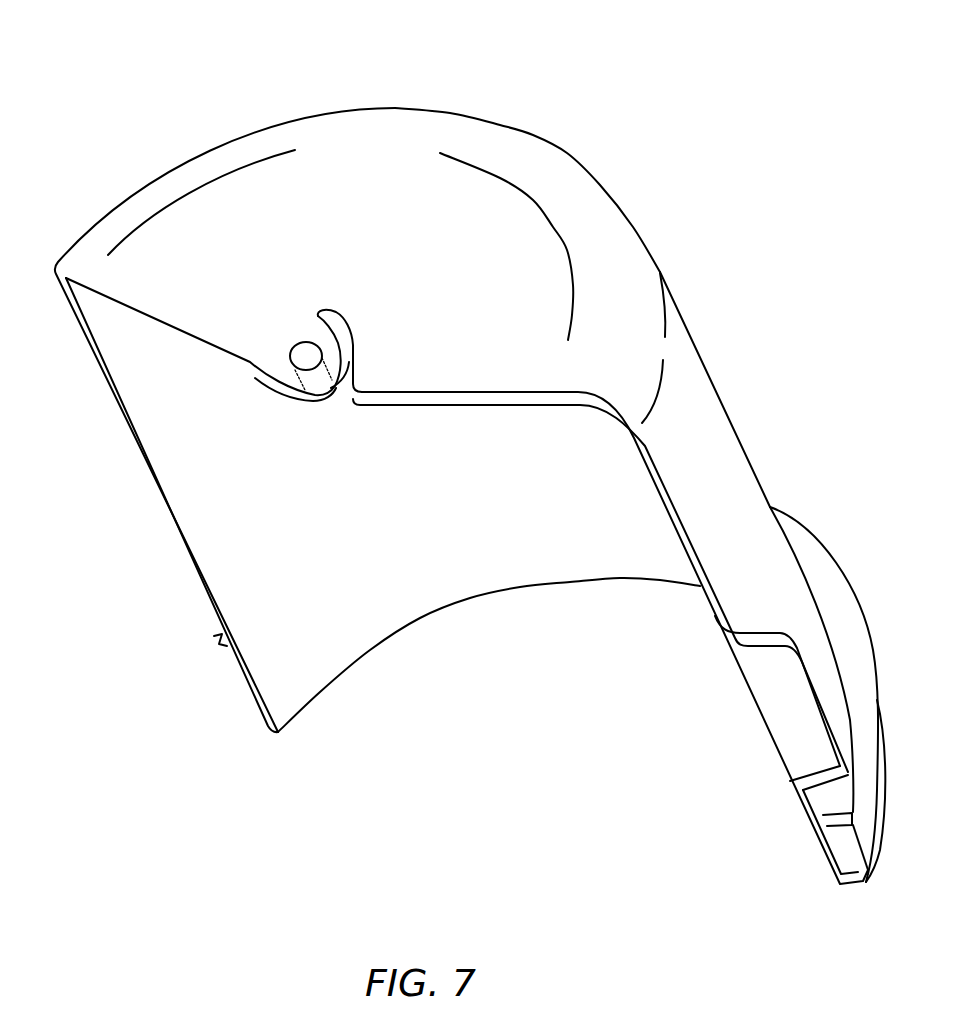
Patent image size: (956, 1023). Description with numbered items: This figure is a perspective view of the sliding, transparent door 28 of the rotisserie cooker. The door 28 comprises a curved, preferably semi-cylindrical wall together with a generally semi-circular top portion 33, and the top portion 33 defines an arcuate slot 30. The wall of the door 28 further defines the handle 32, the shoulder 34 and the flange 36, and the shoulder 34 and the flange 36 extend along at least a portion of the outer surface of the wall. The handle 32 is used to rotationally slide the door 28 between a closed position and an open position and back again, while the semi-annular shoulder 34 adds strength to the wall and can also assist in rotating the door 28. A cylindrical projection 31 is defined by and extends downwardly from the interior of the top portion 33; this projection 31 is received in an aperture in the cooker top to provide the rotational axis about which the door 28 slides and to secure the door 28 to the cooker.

The door 28 is at (629, 168).
The arcuate slot 30 is at (353, 352).
The cylindrical projection 31 is at (322, 397).
The handle 32 is at (777, 710).
The top portion 33 is at (383, 183).
The shoulder 34 is at (835, 598).
The flange 36 is at (866, 868).